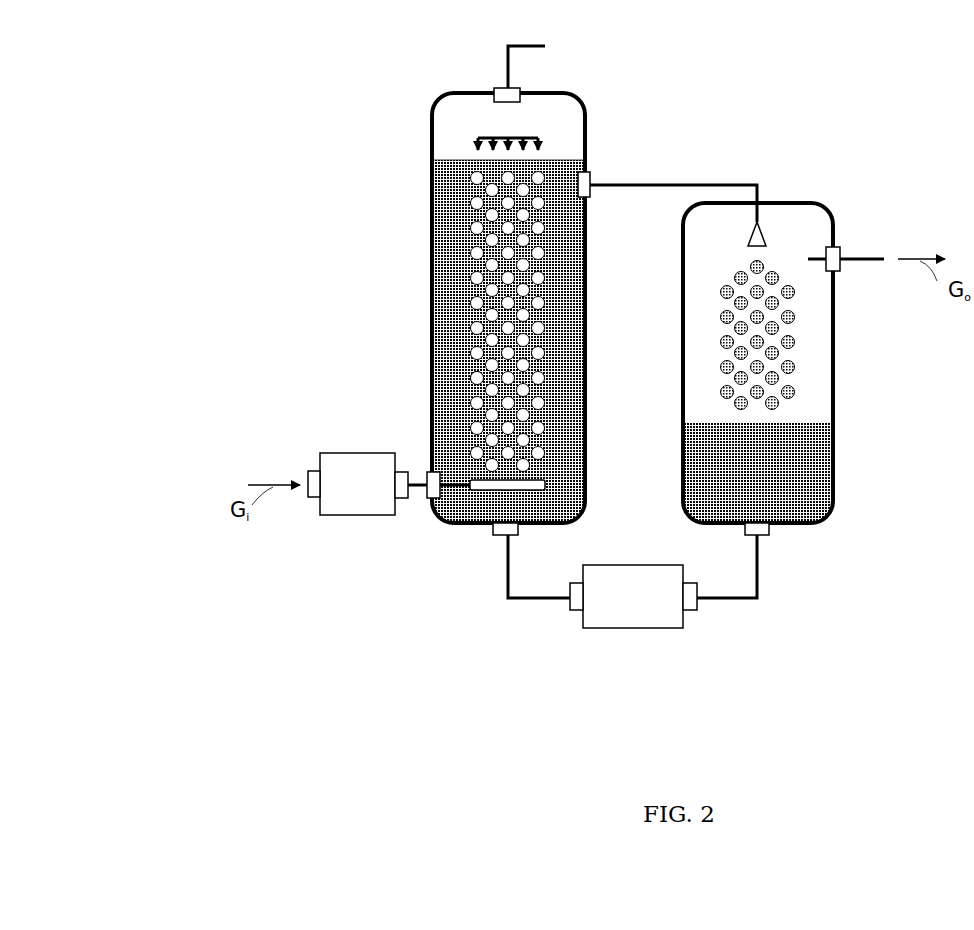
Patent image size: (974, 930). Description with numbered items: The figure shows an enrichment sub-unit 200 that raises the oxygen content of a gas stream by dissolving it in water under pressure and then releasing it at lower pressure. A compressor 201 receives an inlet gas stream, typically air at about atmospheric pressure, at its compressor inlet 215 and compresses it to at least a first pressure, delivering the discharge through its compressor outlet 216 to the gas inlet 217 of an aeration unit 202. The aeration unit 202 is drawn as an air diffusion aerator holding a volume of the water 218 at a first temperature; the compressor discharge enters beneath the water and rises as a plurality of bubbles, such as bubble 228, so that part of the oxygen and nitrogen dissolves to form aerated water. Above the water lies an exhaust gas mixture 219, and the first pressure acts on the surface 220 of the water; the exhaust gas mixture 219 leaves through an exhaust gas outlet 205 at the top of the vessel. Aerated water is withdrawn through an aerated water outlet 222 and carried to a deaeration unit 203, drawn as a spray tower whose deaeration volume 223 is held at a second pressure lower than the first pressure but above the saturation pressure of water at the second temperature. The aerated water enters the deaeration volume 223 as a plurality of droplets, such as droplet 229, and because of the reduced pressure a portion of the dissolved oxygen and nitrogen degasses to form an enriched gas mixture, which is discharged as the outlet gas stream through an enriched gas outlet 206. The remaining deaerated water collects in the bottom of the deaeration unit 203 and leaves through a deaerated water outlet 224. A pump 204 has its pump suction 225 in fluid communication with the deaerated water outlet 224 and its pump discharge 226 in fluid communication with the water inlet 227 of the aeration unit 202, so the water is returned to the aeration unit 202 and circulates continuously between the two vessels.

The enrichment sub-unit 200 is at (244, 83).
The compressor 201 is at (357, 484).
The aeration unit 202 is at (440, 106).
The deaeration unit 203 is at (822, 205).
The pump 204 is at (633, 596).
The exhaust gas outlet 205 is at (510, 93).
The enriched gas outlet 206 is at (838, 248).
The compressor inlet 215 is at (310, 478).
The compressor outlet 216 is at (401, 472).
The gas inlet 217 is at (428, 498).
The volume of the water 218 is at (448, 278).
The exhaust gas mixture 219 is at (563, 131).
The surface of the volume of the water 220 is at (468, 160).
The aerated water outlet 222 is at (588, 198).
The deaeration volume 223 is at (822, 344).
The deaerated water outlet 224 is at (770, 535).
The pump suction 225 is at (697, 602).
The pump discharge 226 is at (578, 597).
The water inlet 227 is at (498, 530).
The bubble 228 is at (478, 376).
The droplet 229 is at (792, 368).